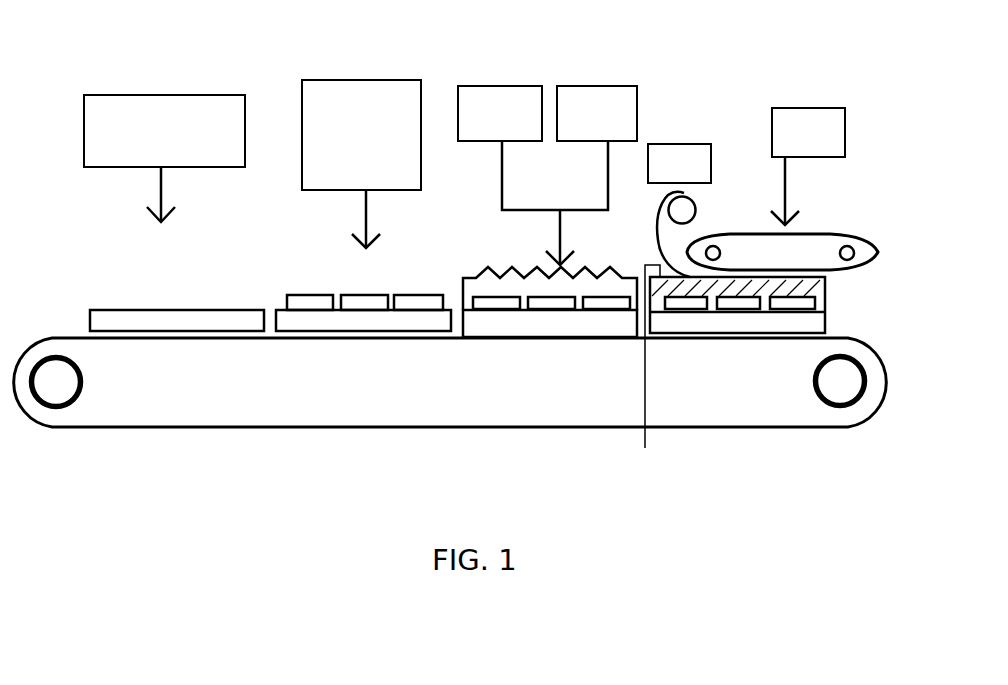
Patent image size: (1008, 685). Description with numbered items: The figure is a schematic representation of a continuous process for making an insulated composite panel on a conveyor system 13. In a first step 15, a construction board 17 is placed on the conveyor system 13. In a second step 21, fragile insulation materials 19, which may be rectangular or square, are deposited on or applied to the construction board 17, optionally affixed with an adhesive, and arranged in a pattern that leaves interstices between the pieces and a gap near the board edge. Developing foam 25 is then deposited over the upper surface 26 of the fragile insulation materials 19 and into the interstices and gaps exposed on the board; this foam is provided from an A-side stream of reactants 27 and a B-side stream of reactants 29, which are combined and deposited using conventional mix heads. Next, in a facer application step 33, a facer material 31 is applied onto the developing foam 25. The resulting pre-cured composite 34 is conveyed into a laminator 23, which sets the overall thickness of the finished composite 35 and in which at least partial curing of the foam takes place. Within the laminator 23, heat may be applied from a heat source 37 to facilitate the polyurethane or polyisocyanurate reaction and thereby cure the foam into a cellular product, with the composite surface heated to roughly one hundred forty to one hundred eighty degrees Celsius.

The conveyor system 13 is at (190, 436).
The first step 15 is at (142, 92).
The construction board 17 is at (182, 303).
The fragile insulation materials 19 is at (313, 292).
The second step 21 is at (338, 78).
The laminator 23 is at (818, 233).
The developing foam 25 is at (549, 206).
The upper surface of fragile insulation materials 26 is at (496, 296).
The A-side stream of reactants 27 is at (486, 84).
The B-side stream of reactants 29 is at (592, 84).
The facer material 31 is at (700, 212).
The facer application step 33 is at (665, 140).
The pre-cured composite 34 is at (647, 377).
The finished composite 35 is at (825, 312).
The heat source 37 is at (810, 106).